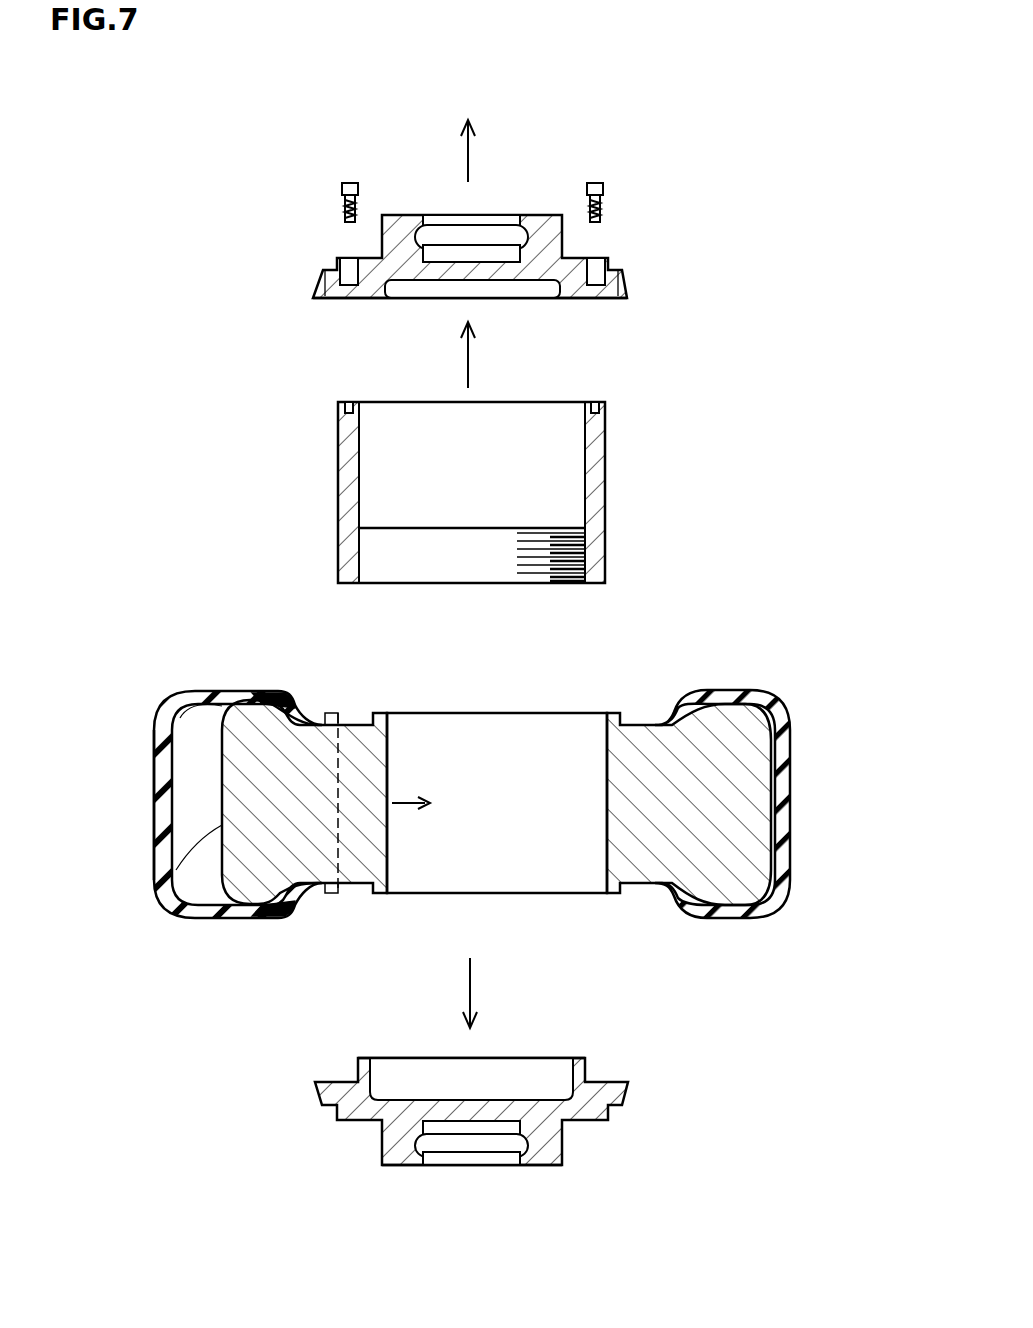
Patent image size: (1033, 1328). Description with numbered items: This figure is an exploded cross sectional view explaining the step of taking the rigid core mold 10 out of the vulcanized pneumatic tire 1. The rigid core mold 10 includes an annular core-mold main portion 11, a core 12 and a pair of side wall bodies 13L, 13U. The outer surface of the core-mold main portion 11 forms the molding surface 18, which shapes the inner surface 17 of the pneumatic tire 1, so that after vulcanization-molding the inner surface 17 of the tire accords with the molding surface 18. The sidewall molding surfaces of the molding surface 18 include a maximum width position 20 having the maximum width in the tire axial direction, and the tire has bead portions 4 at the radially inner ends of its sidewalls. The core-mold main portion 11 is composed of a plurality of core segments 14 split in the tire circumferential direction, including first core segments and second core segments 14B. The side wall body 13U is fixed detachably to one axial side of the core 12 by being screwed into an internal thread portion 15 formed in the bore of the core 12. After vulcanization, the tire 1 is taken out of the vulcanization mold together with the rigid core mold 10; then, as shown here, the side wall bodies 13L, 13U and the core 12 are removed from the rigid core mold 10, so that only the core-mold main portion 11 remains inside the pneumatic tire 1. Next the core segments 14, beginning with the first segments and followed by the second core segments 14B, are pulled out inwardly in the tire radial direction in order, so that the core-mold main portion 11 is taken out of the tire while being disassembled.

The pneumatic tire 1 is at (150, 780).
The bead portions 4 is at (293, 689).
The rigid core mold 10 is at (676, 366).
The core-mold main portion 11 is at (636, 895).
The core 12 is at (600, 445).
The side wall body 13L is at (546, 218).
The side wall body 13U is at (590, 1150).
The core segments 14 is at (732, 730).
The second core segments 14B is at (352, 757).
The internal thread portion 15 is at (585, 550).
The inner surface 17 is at (200, 710).
The molding surface 18 is at (220, 825).
The maximum width position 20 is at (265, 700).